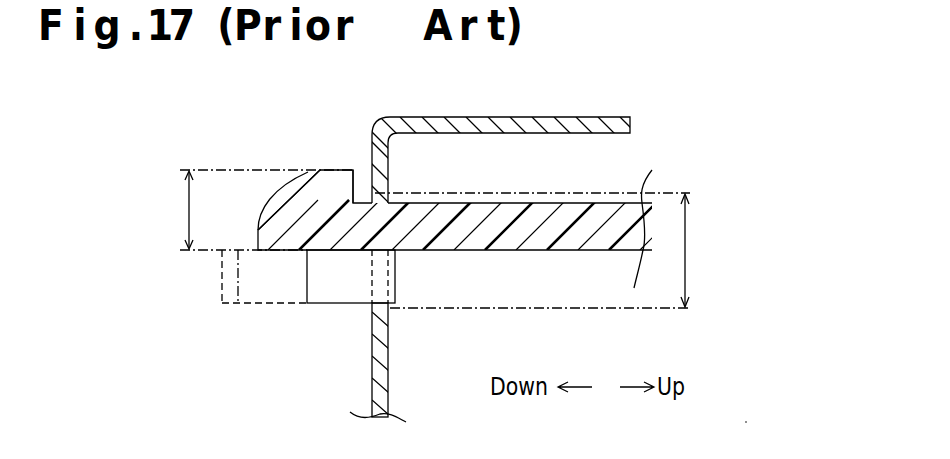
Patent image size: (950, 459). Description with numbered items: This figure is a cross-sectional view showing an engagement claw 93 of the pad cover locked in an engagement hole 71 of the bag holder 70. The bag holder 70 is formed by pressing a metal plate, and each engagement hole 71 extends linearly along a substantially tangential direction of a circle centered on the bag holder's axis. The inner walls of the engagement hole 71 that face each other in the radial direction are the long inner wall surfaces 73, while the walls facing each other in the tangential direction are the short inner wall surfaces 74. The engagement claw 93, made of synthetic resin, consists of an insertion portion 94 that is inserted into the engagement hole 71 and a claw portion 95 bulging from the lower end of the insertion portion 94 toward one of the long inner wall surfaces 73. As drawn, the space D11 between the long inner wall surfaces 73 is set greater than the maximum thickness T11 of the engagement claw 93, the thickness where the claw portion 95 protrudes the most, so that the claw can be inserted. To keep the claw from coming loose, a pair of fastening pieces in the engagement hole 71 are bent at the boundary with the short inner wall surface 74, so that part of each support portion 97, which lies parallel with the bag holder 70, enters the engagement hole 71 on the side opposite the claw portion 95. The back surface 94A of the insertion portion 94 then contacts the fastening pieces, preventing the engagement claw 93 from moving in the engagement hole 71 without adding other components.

The bag holder 70 is at (536, 92).
The engagement hole 71 is at (388, 197).
The long inner wall surface 73 is at (373, 303).
The short inner wall surface 74 is at (398, 266).
The engagement claw 93 is at (365, 125).
The insertion portion 94 is at (357, 203).
The back surface 94A is at (326, 251).
The claw portion 95 is at (332, 176).
The support portion 97 is at (222, 279).
The maximum thickness of the engagement claw T11 is at (188, 212).
The space between the long inner wall surfaces D11 is at (688, 250).